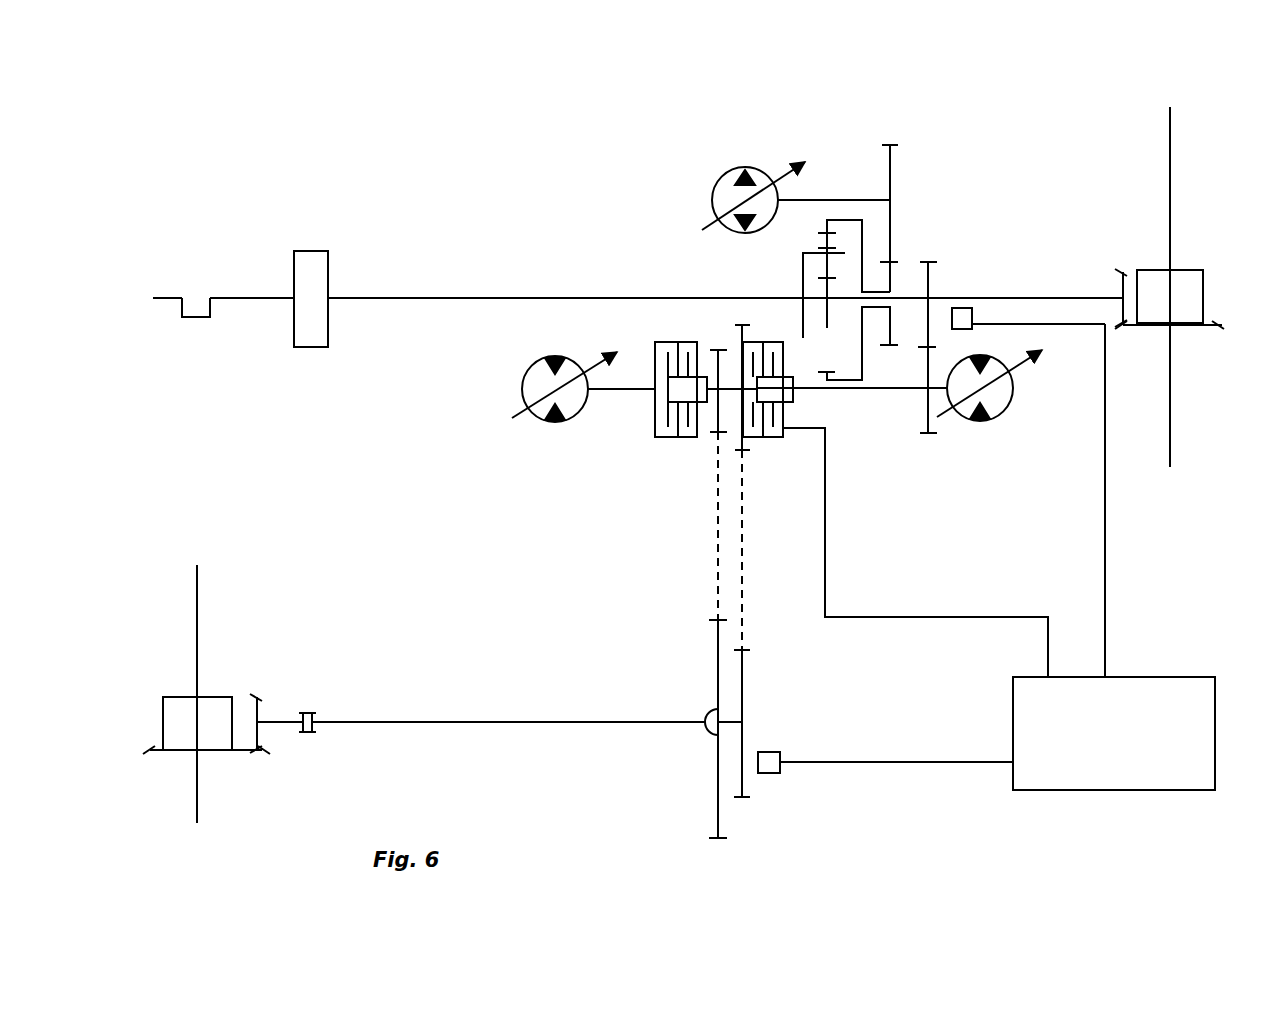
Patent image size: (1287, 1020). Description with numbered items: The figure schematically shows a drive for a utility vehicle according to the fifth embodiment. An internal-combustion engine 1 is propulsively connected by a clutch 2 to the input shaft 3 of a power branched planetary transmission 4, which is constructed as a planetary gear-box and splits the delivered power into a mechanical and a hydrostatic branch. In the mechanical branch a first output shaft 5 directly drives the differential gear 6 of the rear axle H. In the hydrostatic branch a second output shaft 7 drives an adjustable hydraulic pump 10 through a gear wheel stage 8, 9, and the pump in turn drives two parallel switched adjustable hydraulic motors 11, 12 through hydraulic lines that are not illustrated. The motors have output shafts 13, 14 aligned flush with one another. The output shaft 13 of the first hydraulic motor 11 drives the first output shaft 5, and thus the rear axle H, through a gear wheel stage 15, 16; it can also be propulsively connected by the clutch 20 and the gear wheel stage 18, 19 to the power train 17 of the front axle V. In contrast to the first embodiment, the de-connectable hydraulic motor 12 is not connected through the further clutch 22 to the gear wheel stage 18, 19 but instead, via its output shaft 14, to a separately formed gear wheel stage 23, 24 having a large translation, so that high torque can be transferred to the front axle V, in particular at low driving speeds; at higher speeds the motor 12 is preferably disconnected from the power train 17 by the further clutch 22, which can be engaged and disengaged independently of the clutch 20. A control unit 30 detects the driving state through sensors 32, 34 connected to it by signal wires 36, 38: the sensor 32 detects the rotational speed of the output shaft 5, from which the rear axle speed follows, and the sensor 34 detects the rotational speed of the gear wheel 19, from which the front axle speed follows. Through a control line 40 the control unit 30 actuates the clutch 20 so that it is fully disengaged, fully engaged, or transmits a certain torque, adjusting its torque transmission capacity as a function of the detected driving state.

The internal-combustion engine 1 is at (196, 310).
The clutch 2 is at (308, 258).
The input shaft 3 is at (458, 297).
The planetary transmission 4 is at (835, 168).
The first output shaft 5 is at (1076, 297).
The differential gear 6 is at (1187, 282).
The second output shaft 7 is at (867, 308).
The gear wheel 8 is at (890, 280).
The gear wheel 9 is at (895, 145).
The hydraulic pump 10 is at (733, 195).
The first hydraulic motor 11 is at (993, 392).
The second hydraulic motor 12 is at (540, 407).
The output shaft 13 is at (823, 392).
The output shaft 14 is at (605, 392).
The gear wheel 15 is at (930, 422).
The gear wheel 16 is at (932, 287).
The power train 17 is at (540, 722).
The gear wheel 18 is at (738, 335).
The gear wheel 19 is at (745, 695).
The clutch 20 is at (767, 438).
The further clutch 22 is at (680, 438).
The gear wheel 23 is at (715, 438).
The gear wheel 24 is at (716, 678).
The control unit 30 is at (1155, 677).
The sensor 32 is at (963, 307).
The sensor 34 is at (768, 773).
The signal wire 36 is at (1107, 503).
The signal wire 38 is at (892, 762).
The control line 40 is at (922, 617).
The rear axle H is at (1172, 385).
The front axle V is at (197, 595).